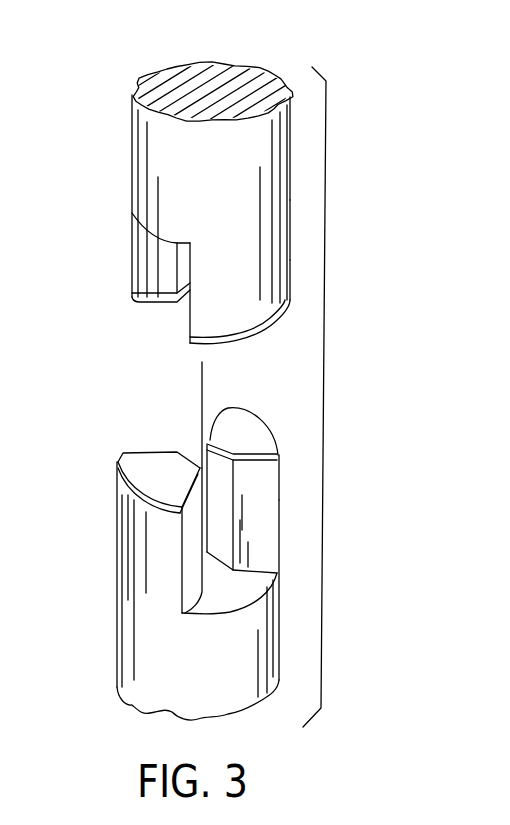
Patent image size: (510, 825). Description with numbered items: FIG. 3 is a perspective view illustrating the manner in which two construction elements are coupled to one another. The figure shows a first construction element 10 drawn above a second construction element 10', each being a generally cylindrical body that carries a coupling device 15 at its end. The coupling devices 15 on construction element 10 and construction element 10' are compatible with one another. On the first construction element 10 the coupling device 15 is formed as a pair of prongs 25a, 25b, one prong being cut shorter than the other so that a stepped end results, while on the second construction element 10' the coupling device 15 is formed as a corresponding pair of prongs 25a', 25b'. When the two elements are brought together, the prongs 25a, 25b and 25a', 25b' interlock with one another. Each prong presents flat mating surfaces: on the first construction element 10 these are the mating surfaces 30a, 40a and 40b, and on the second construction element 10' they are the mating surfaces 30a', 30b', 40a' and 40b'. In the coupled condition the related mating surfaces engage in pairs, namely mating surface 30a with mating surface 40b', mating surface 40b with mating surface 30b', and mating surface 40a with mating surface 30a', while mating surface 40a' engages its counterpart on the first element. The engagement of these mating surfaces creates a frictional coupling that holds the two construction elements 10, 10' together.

The construction element 10 is at (176, 182).
The construction element 10' is at (167, 591).
The coupling device 15 is at (288, 273).
The prong 25a is at (305, 313).
The prong 25b is at (121, 253).
The prong 25a' is at (300, 567).
The prong 25b' is at (123, 531).
The mating surface 30a is at (120, 304).
The mating surface 30a' is at (313, 489).
The mating surface 30b' is at (150, 429).
The mating surface 40a is at (355, 209).
The mating surface 40b is at (121, 293).
The mating surface 40a' is at (250, 415).
The mating surface 40b' is at (124, 570).